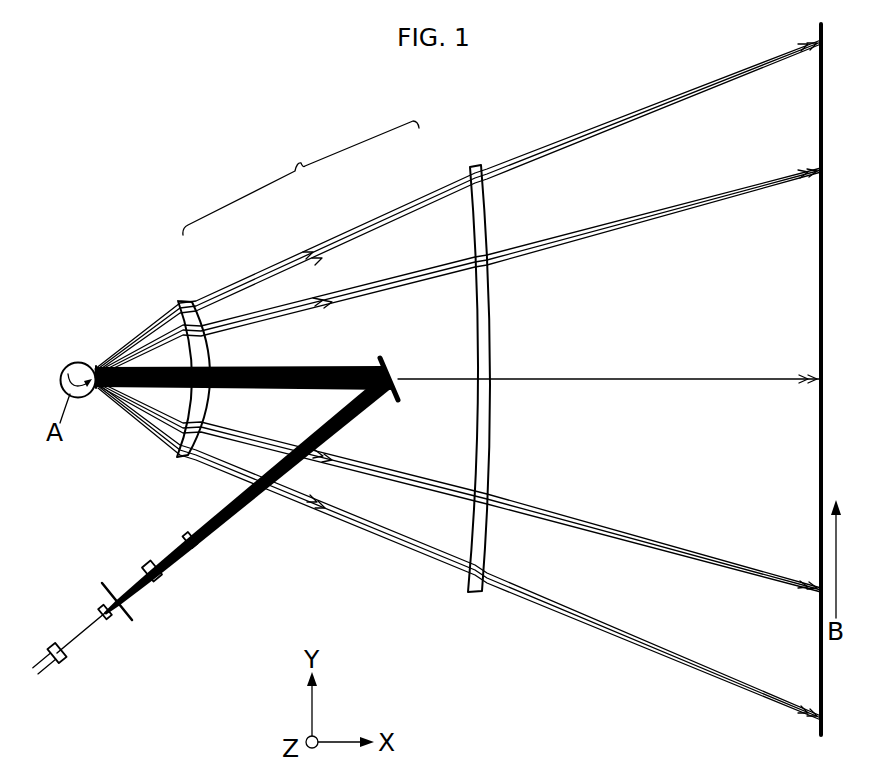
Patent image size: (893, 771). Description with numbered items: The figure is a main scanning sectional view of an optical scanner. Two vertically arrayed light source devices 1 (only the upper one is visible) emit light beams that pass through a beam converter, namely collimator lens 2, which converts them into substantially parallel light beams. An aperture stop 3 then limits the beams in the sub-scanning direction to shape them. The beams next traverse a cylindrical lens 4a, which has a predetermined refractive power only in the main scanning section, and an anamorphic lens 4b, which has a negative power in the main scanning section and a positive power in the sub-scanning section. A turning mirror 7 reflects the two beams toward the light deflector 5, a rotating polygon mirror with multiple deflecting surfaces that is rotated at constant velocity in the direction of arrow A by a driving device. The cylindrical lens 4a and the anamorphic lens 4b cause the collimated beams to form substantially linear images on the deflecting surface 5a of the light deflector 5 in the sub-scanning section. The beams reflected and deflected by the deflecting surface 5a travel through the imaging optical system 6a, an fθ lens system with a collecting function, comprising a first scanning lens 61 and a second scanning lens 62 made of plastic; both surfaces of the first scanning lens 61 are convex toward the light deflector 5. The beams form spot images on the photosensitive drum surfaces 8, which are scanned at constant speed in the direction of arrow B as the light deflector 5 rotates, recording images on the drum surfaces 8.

The light source device 1 is at (52, 647).
The beam converter (collimator lens) 2 is at (98, 608).
The aperture stop 3 is at (127, 624).
The cylindrical lens 4a is at (160, 582).
The anamorphic lens 4b is at (200, 553).
The light deflector 5 is at (63, 367).
The deflecting surface 5a is at (100, 394).
The imaging optical system 6a is at (301, 178).
The first scanning lens 61 is at (185, 300).
The second scanning lens 62 is at (470, 167).
The turning mirror 7 is at (393, 360).
The photosensitive drum surface 8 is at (822, 92).